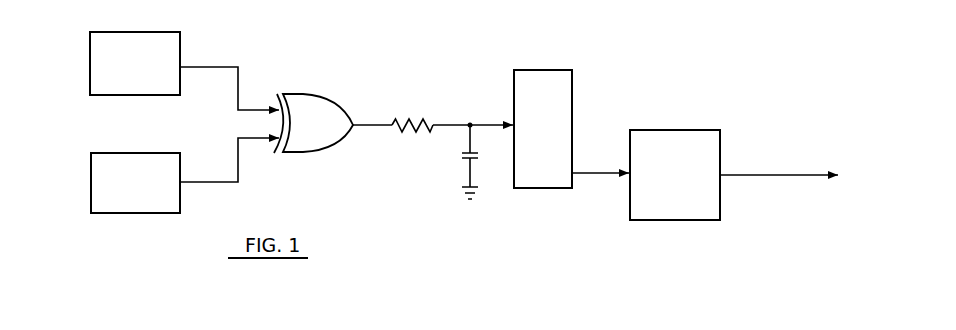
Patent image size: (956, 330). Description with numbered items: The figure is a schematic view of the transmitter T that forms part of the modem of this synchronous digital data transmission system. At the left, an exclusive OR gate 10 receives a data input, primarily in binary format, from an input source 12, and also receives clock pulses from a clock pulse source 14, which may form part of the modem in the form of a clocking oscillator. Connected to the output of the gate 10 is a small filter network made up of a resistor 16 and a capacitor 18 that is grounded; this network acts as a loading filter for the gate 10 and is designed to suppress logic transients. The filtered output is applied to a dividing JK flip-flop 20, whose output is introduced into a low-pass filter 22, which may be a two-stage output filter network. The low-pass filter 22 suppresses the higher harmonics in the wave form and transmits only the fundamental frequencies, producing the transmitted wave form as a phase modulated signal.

The exclusive OR gate 10 is at (303, 118).
The input source 12 is at (91, 68).
The clock pulse source 14 is at (91, 172).
The resistor 16 is at (413, 132).
The capacitor 18 is at (463, 155).
The dividing JK flip-flop 20 is at (553, 92).
The low-pass filter 22 is at (665, 138).
The transmitter T is at (371, 72).